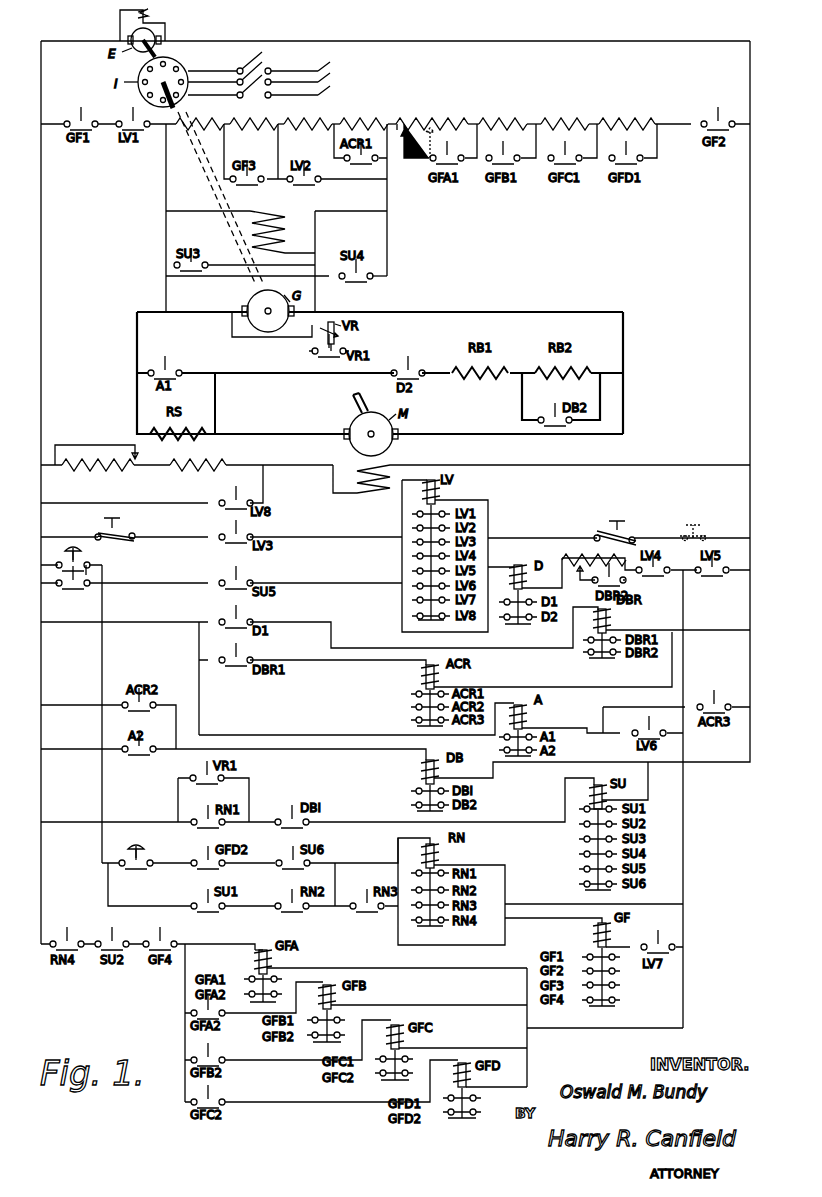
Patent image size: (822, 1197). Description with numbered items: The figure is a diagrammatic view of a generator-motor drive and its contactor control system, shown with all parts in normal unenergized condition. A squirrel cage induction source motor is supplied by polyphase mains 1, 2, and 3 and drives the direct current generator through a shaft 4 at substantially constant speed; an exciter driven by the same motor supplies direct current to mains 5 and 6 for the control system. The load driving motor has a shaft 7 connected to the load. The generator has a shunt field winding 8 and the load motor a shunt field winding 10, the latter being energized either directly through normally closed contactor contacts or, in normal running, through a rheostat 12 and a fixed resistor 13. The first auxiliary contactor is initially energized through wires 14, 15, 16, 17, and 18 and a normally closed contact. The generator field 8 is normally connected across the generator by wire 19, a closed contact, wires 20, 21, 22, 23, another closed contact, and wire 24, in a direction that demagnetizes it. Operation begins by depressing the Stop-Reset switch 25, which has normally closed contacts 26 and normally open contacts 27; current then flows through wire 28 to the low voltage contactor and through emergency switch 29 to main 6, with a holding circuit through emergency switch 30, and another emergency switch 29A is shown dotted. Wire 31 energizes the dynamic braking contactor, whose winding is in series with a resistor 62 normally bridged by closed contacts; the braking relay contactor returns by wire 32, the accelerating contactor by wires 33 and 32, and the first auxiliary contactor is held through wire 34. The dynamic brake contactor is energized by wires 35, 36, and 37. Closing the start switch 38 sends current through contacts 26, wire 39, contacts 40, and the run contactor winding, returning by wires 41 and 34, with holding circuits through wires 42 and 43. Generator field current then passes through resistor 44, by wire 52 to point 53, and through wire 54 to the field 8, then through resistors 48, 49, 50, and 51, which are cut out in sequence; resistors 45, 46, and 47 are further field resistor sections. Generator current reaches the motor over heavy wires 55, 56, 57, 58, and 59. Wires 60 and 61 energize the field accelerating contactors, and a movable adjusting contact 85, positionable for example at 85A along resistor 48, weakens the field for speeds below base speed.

The polyphase main 1 is at (263, 62).
The polyphase main 2 is at (267, 73).
The polyphase main 3 is at (268, 87).
The shaft 4 is at (180, 112).
The main 5 is at (84, 40).
The main 6 is at (556, 42).
The shaft 7 is at (364, 400).
The shunt field winding 8 is at (286, 235).
The shunt field winding 10 is at (355, 490).
The rheostat 12 is at (110, 478).
The fixed value resistor 13 is at (200, 465).
The wire 14 is at (140, 624).
The wire 15 is at (198, 648).
The wire 16 is at (288, 735).
The wire 17 is at (578, 728).
The line 18 is at (650, 706).
The wire 19 is at (200, 282).
The wire 20 is at (388, 246).
The wire 21 is at (345, 210).
The wire 22 is at (180, 210).
The wire 23 is at (165, 236).
The wire 24 is at (228, 264).
The Stop-Reset switch 25 is at (66, 554).
The normally closed contacts 26 is at (88, 562).
The normally open contacts 27 is at (80, 588).
The wire 28 is at (401, 556).
The emergency switch 29 is at (606, 530).
The emergency switch 29A is at (692, 526).
The emergency switch 30 is at (120, 518).
The wire 31 is at (401, 598).
The wire 32 is at (700, 630).
The wire 33 is at (550, 686).
The wire 34 is at (684, 698).
The wire 35 is at (66, 706).
The wire 36 is at (296, 768).
The wire 37 is at (598, 761).
The start switch 38 is at (144, 848).
The wire 39 is at (103, 662).
The contacts 40 is at (140, 868).
The wire 41 is at (543, 902).
The wire 42 is at (168, 900).
The wire 43 is at (336, 880).
The generator field resistor 44 is at (205, 120).
The generator field resistor 45 is at (259, 120).
The generator field resistor 46 is at (309, 120).
The generator field resistor 47 is at (357, 120).
The generator field resistor 48 is at (437, 120).
The generator field resistor 49 is at (500, 120).
The generator field resistor 50 is at (562, 120).
The generator field resistor 51 is at (628, 120).
The wire 52 is at (388, 165).
The point 53 is at (389, 120).
The wire 54 is at (165, 168).
The wire 55 is at (136, 348).
The wire 56 is at (216, 402).
The wire 57 is at (495, 432).
The wire 58 is at (624, 340).
The wire 59 is at (500, 310).
The wire 60 is at (210, 950).
The wire 61 is at (526, 990).
The resistor 62 is at (565, 556).
The movable adjusting contact 85 is at (415, 141).
The position 85A is at (436, 146).